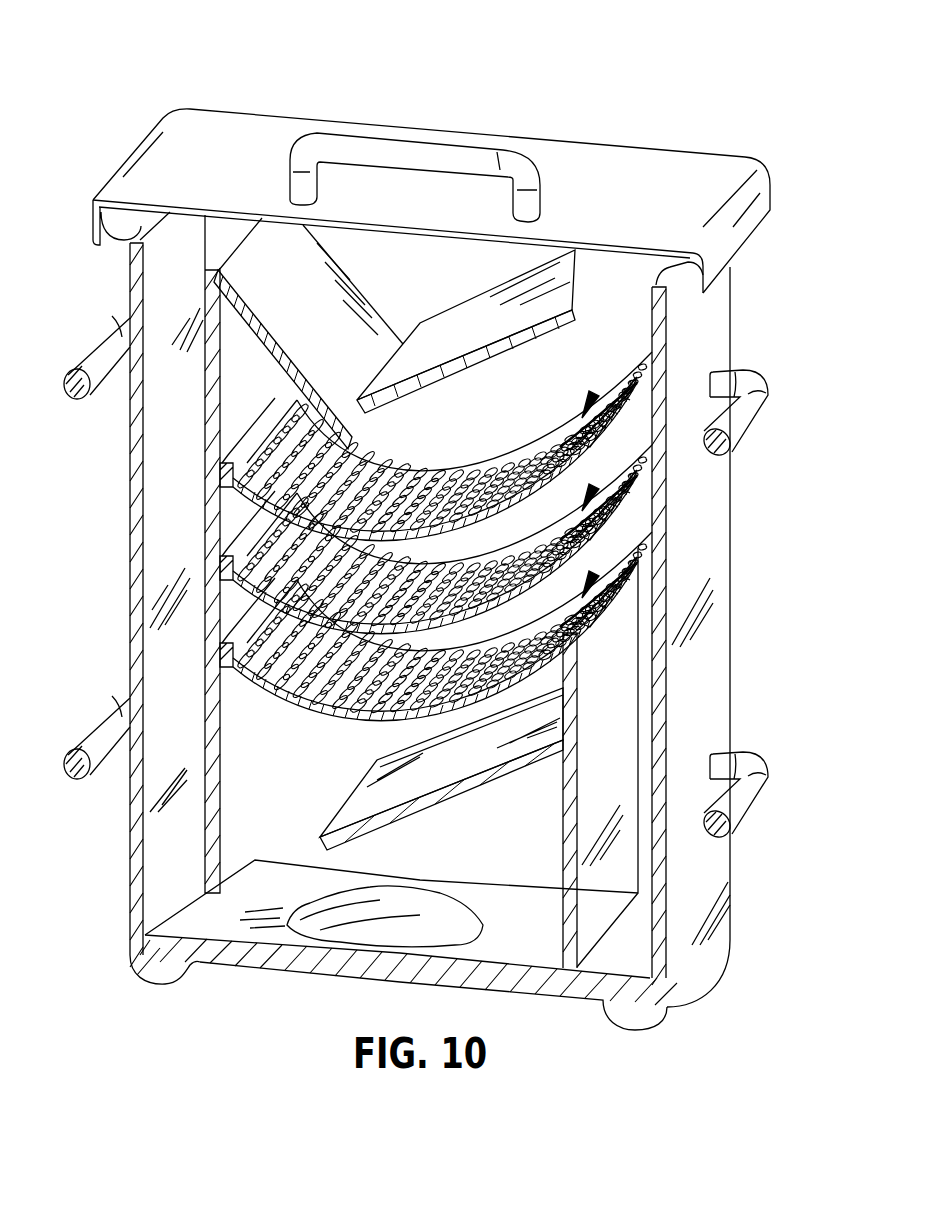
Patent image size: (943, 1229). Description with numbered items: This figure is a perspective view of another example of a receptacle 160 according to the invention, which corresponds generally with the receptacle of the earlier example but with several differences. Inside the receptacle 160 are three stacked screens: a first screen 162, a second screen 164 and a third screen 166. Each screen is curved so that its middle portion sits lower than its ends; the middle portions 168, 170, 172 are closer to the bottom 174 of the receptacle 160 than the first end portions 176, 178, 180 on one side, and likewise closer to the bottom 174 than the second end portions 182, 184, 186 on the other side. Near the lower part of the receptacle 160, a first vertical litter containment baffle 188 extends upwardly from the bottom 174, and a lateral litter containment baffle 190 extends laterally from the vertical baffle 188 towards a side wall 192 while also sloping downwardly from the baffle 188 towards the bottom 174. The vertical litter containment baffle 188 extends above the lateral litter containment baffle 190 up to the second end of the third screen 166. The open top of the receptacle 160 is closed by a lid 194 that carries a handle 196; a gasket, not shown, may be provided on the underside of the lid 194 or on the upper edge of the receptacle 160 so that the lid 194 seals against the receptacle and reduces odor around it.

The receptacle 160 is at (441, 529).
The first screen 162 is at (603, 387).
The second screen 164 is at (600, 467).
The third screen 166 is at (600, 562).
The middle portion 168 is at (247, 470).
The middle portion 170 is at (247, 553).
The middle portion 172 is at (247, 650).
The bottom 174 is at (232, 928).
The first end portion 176 is at (273, 400).
The first end portion 178 is at (237, 527).
The first end portion 180 is at (237, 612).
The second end portion 182 is at (600, 420).
The second end portion 184 is at (600, 505).
The second end portion 186 is at (600, 600).
The first vertical litter containment baffle 188 is at (592, 907).
The lateral litter containment baffle 190 is at (367, 800).
The side wall 192 is at (152, 878).
The lid 194 is at (240, 133).
The handle 196 is at (374, 135).